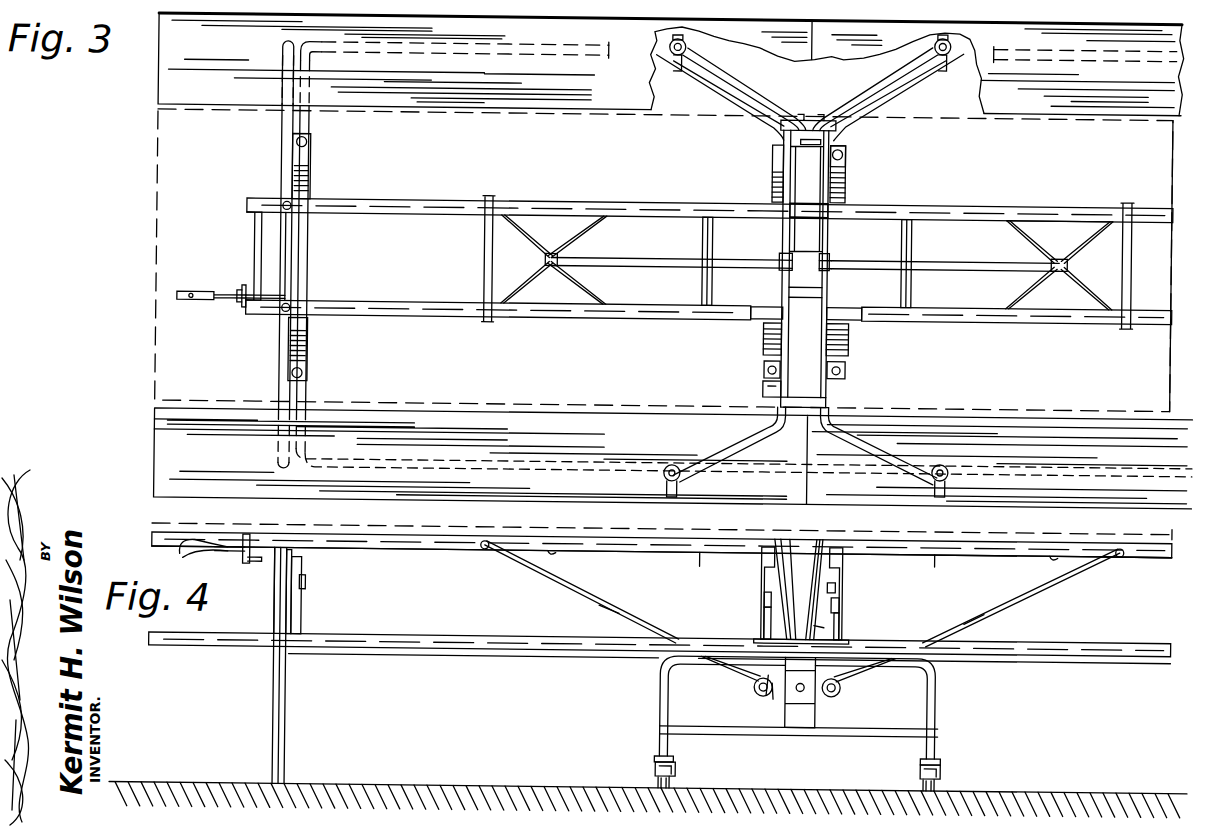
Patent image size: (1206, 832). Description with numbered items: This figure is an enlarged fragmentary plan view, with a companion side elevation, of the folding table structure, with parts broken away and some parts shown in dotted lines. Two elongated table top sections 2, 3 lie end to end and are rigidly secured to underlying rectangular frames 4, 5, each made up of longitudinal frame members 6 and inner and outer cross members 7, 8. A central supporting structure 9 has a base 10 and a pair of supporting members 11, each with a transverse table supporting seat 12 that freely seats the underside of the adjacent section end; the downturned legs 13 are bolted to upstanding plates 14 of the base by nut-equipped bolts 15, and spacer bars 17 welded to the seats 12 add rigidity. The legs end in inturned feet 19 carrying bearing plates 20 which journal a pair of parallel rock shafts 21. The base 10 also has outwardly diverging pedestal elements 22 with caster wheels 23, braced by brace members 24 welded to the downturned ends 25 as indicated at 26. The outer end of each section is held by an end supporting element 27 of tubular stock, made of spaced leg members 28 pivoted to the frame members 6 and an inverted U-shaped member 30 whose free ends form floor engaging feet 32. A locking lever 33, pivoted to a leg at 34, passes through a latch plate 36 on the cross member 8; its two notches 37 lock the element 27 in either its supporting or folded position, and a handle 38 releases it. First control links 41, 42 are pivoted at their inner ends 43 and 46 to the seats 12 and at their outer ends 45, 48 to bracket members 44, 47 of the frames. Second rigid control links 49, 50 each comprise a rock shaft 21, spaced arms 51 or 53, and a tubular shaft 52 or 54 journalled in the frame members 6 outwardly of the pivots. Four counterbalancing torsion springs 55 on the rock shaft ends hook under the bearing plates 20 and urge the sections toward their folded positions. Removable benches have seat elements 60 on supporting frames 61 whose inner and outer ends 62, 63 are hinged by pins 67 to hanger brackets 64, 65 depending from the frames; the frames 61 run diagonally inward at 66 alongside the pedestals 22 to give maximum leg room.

In FIG. 3, the table top section 2 is at (157, 252).
In FIG. 4, the table top section 2 is at (456, 530).
In FIG. 3, the table top section 3 is at (1097, 402).
In FIG. 4, the table top section 3 is at (1045, 532).
In FIG. 3, the underlying frame 4 is at (420, 316).
In FIG. 4, the underlying frame 4 is at (418, 548).
In FIG. 3, the underlying frame 5 is at (1036, 196).
In FIG. 4, the underlying frame 5 is at (1130, 549).
In FIG. 3, the longitudinally extending frame member 6 is at (428, 199).
In FIG. 4, the longitudinally extending frame member 6 is at (378, 548).
In FIG. 3, the inner cross member 7 is at (713, 287).
In FIG. 3, the outer cross member 8 is at (250, 242).
In FIG. 3, the central supporting structure 9 is at (764, 383).
In FIG. 4, the central supporting structure 9 is at (830, 619).
In FIG. 4, the base 10 is at (800, 731).
In FIG. 3, the supporting member 11 is at (840, 168).
In FIG. 3, the table supporting seat 12 is at (789, 288).
In FIG. 4, the leg 13 is at (785, 606).
In FIG. 3, the upstanding plate 14 is at (812, 112).
In FIG. 4, the upstanding plate 14 is at (813, 708).
In FIG. 3, the nut-equipped bolt 15 is at (825, 116).
In FIG. 4, the nut-equipped bolt 15 is at (830, 641).
In FIG. 3, the spacer bar 17 is at (812, 304).
In FIG. 4, the spacer bar 17 is at (802, 586).
In FIG. 3, the foot 19 is at (790, 172).
In FIG. 3, the bearing plate 20 is at (730, 348).
In FIG. 4, the bearing plate 20 is at (775, 691).
In FIG. 3, the rock shaft 21 is at (776, 229).
In FIG. 3, the pedestal element 22 is at (735, 90).
In FIG. 4, the pedestal element 22 is at (704, 657).
In FIG. 3, the caster wheel 23 is at (678, 74).
In FIG. 4, the caster wheel 23 is at (658, 776).
In FIG. 4, the brace member 24 is at (862, 729).
In FIG. 4, the downturned end 25 is at (662, 706).
In FIG. 4, the welded connection 26 is at (662, 732).
In FIG. 3, the end supporting element 27 is at (280, 365).
In FIG. 4, the end supporting element 27 is at (275, 694).
In FIG. 4, the leg member 28 is at (275, 614).
In FIG. 3, the U-shaped member 30 is at (282, 124).
In FIG. 4, the floor engaging foot 32 is at (290, 781).
In FIG. 3, the locking lever 33 is at (233, 302).
In FIG. 4, the locking lever 33 is at (265, 562).
In FIG. 3, the pivotal connection 34 is at (291, 296).
In FIG. 3, the latch plate 36 is at (243, 290).
In FIG. 4, the latch plate 36 is at (248, 556).
In FIG. 4, the notch 37 is at (222, 552).
In FIG. 3, the handle 38 is at (192, 301).
In FIG. 4, the handle 38 is at (184, 549).
In FIG. 3, the first control link 41 is at (665, 247).
In FIG. 4, the first control link 41 is at (700, 556).
In FIG. 3, the first control link 42 is at (968, 256).
In FIG. 4, the first control link 42 is at (935, 560).
In FIG. 3, the inner end 43 is at (782, 258).
In FIG. 3, the bracket member 44 is at (588, 233).
In FIG. 4, the bracket member 44 is at (556, 550).
In FIG. 3, the pivotal connection 45 is at (552, 264).
In FIG. 3, the pivotal connection 46 is at (834, 258).
In FIG. 3, the bracket member 47 is at (1036, 233).
In FIG. 4, the bracket member 47 is at (1050, 556).
In FIG. 3, the pivotal connection 48 is at (1058, 264).
In FIG. 4, the second control link 49 is at (566, 597).
In FIG. 4, the second control link 50 is at (1045, 601).
In FIG. 3, the arm 51 is at (735, 318).
In FIG. 4, the arm 51 is at (615, 604).
In FIG. 3, the tubular transverse shaft 52 is at (485, 259).
In FIG. 4, the tubular transverse shaft 52 is at (490, 537).
In FIG. 3, the arm 53 is at (858, 318).
In FIG. 4, the arm 53 is at (977, 618).
In FIG. 3, the tubular shaft 54 is at (1124, 270).
In FIG. 4, the tubular shaft 54 is at (1121, 539).
In FIG. 3, the counterbalancing torsion spring 55 is at (771, 166).
In FIG. 4, the counterbalancing torsion spring 55 is at (758, 685).
In FIG. 3, the seat element 60 is at (546, 92).
In FIG. 4, the seat element 60 is at (436, 632).
In FIG. 3, the supporting frame 61 is at (604, 56).
In FIG. 4, the supporting frame 61 is at (456, 654).
In FIG. 4, the inner end 62 is at (763, 588).
In FIG. 4, the outer end 63 is at (302, 607).
In FIG. 4, the hanger bracket 64 is at (762, 563).
In FIG. 4, the hanger bracket 65 is at (299, 569).
In FIG. 3, the diagonal portion 66 is at (745, 92).
In FIG. 4, the hinge pin 67 is at (308, 585).